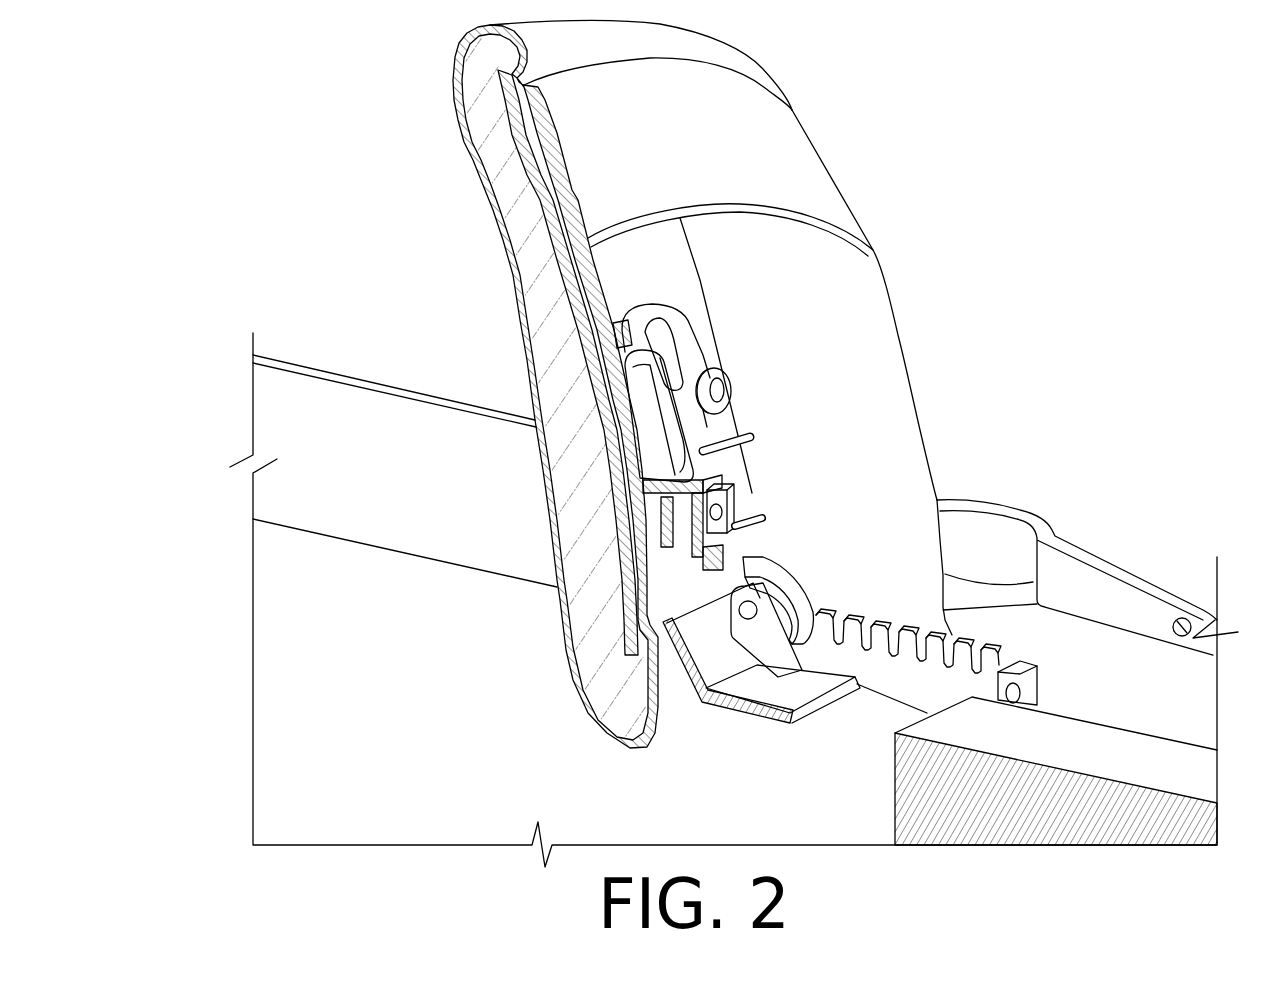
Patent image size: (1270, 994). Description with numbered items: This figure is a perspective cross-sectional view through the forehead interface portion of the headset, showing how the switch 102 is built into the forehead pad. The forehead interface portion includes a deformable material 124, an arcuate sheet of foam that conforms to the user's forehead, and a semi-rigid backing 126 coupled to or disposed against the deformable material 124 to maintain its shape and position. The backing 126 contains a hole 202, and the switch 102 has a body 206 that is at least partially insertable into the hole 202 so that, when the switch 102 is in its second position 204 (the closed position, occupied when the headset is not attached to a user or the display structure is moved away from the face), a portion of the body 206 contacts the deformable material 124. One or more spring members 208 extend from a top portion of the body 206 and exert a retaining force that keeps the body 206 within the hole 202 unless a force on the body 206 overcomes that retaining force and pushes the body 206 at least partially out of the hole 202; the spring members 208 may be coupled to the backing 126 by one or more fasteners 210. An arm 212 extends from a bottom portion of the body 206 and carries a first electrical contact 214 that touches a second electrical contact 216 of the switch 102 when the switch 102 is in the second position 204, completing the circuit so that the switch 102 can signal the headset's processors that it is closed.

The switch 102 is at (770, 437).
The deformable material 124 is at (860, 303).
The backing 126 is at (827, 177).
The hole 202 is at (657, 500).
The second position 204 is at (740, 505).
The body 206 is at (632, 414).
The spring members 208 is at (663, 322).
The fasteners 210 is at (722, 393).
The arm 212 is at (762, 527).
The first electrical contact 214 is at (707, 520).
The second electrical contact 216 is at (628, 643).